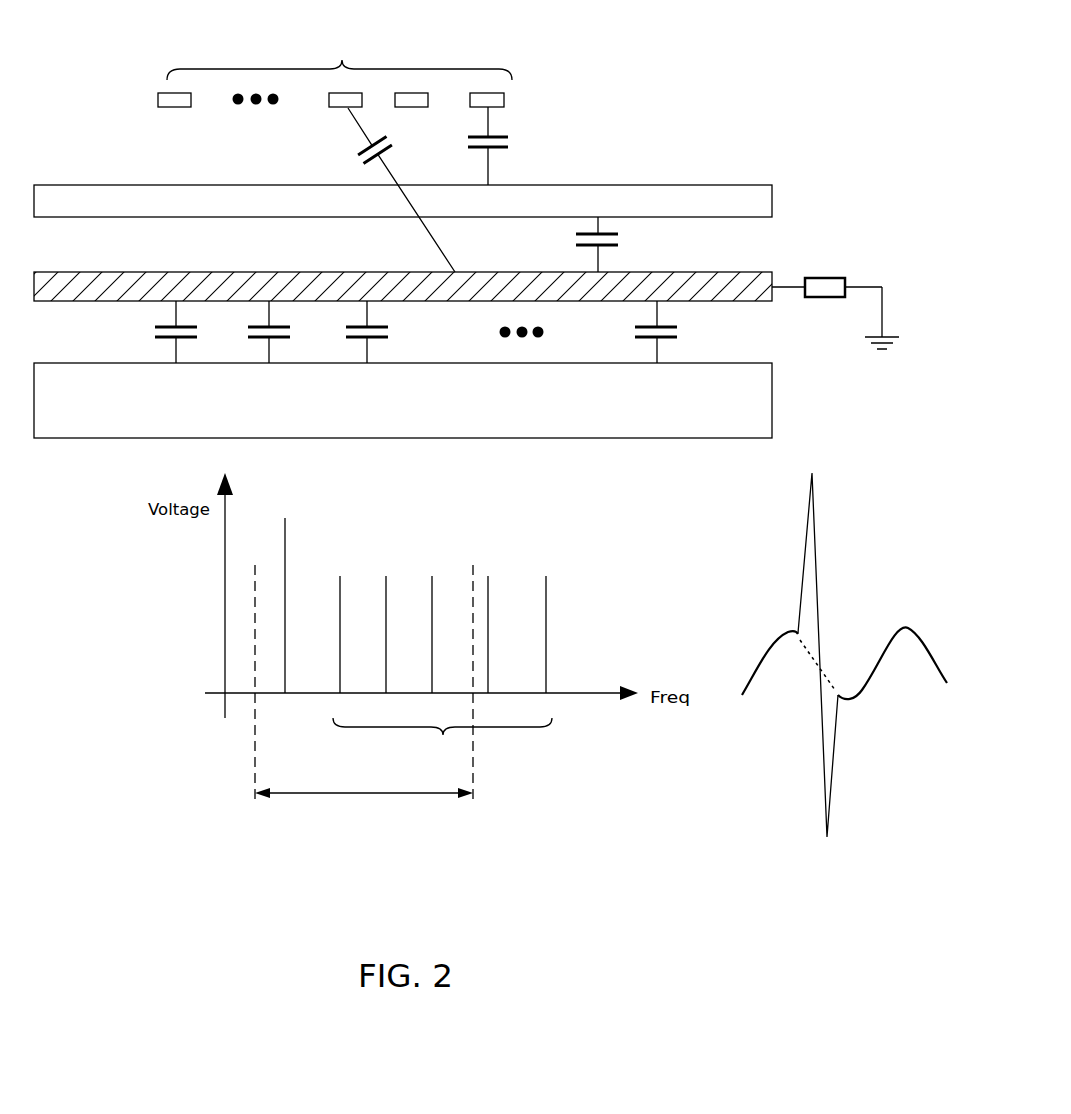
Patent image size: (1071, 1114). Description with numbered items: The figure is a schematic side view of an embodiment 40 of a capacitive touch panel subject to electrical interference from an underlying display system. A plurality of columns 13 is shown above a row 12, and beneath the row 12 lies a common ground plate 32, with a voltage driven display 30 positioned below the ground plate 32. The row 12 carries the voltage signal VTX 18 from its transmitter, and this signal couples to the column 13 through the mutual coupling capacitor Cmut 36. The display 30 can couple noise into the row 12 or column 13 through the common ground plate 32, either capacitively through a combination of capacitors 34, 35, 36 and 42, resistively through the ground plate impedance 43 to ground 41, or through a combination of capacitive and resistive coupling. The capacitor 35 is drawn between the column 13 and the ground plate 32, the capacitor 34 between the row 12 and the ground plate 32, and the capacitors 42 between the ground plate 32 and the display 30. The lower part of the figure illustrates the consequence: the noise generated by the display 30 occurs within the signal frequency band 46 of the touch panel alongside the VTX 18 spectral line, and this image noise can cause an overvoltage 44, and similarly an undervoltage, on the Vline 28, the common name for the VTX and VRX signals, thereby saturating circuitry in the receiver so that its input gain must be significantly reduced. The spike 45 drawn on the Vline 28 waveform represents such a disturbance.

The column 13 is at (342, 60).
The row 12 is at (403, 185).
The common ground plate 32 is at (402, 270).
The voltage driven display 30 is at (403, 400).
The capacitor 35 is at (392, 149).
The mutual coupling capacitor Cmut 36 is at (498, 149).
The capacitor 34 is at (590, 248).
The capacitor 42 is at (670, 339).
The ground plate impedance 43 is at (826, 278).
The ground 41 is at (884, 312).
The embodiment 40 is at (641, 120).
The voltage signal VTX 18 is at (287, 547).
The overvoltage 44 is at (443, 735).
The signal frequency band 46 is at (362, 795).
The voltage spike 45 is at (807, 535).
The Vline 28 is at (776, 640).